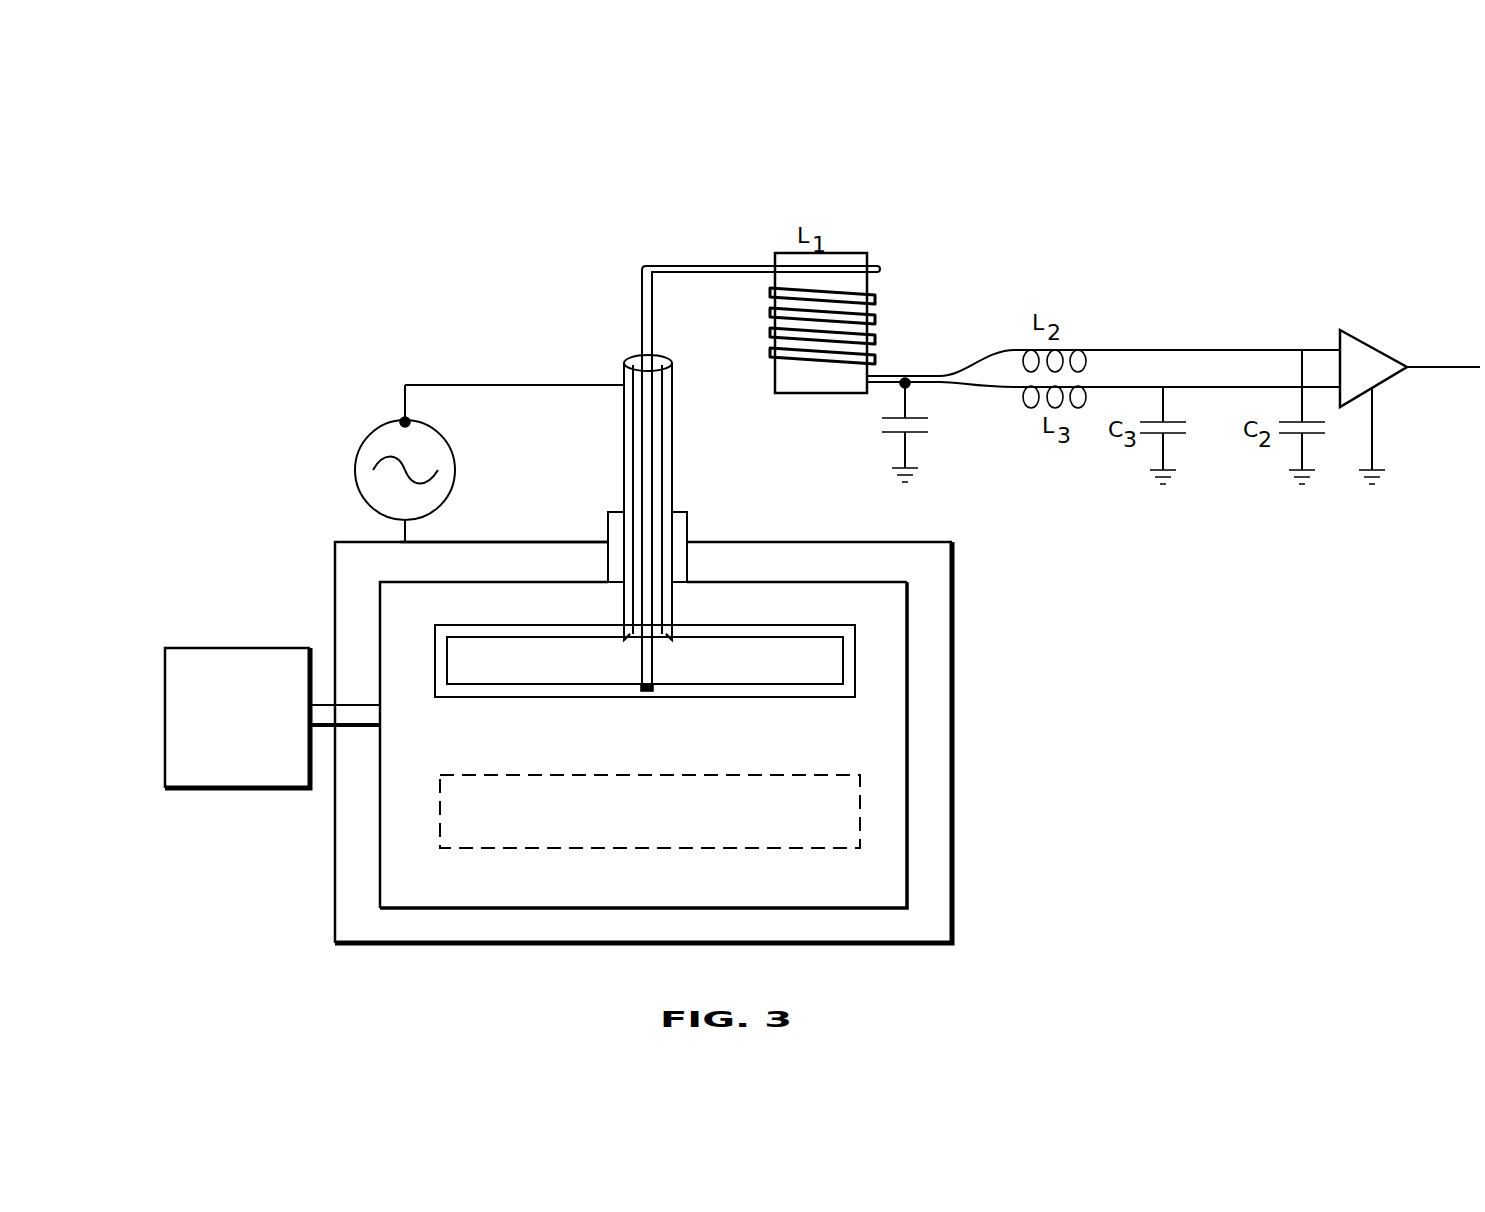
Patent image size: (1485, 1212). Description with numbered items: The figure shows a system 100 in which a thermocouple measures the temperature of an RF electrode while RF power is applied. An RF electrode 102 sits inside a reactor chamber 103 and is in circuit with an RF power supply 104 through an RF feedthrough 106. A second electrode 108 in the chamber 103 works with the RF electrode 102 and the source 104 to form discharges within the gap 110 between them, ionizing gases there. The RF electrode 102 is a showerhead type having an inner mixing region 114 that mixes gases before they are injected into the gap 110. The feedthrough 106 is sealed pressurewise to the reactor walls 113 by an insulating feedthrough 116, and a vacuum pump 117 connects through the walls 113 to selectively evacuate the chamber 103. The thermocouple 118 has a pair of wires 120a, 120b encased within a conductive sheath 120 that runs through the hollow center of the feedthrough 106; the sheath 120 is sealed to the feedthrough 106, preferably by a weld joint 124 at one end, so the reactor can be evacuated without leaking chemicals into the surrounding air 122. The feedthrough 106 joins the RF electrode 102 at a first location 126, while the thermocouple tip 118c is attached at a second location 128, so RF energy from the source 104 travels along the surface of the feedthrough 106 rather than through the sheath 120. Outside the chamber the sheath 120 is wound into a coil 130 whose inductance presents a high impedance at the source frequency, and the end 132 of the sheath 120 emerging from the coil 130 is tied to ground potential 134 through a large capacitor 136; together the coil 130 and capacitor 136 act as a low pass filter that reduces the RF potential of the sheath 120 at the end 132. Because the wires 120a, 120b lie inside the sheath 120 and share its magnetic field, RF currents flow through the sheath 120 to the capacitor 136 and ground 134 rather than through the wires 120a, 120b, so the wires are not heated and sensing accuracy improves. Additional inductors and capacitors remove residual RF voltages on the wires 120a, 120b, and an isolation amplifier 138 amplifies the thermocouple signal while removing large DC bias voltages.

The system 100 is at (1188, 884).
The RF electrode 102 is at (857, 660).
The reactor chamber 103 is at (953, 866).
The RF power supply 104 is at (356, 468).
The RF feedthrough 106 is at (673, 447).
The second electrode 108 is at (792, 821).
The gap 110 is at (667, 757).
The reactor walls 113 is at (493, 557).
The inner mixing region 114 is at (538, 678).
The insulating feedthrough 116 is at (688, 520).
The vacuum pump 117 is at (246, 766).
The thermocouple 118 is at (612, 191).
The thermocouple tip 118c is at (640, 674).
The conductive sheath 120 is at (646, 262).
The thermocouple wire 120a is at (970, 372).
The thermocouple wire 120b is at (995, 388).
The air 122 is at (527, 279).
The weld joint 124 is at (662, 352).
The first location 126 is at (665, 640).
The second location 128 is at (652, 690).
The coil 130 is at (838, 192).
The end of the sheath 132 is at (938, 375).
The ground potential 134 is at (915, 482).
The capacitor 136 is at (930, 435).
The isolation amplifier 138 is at (1360, 355).